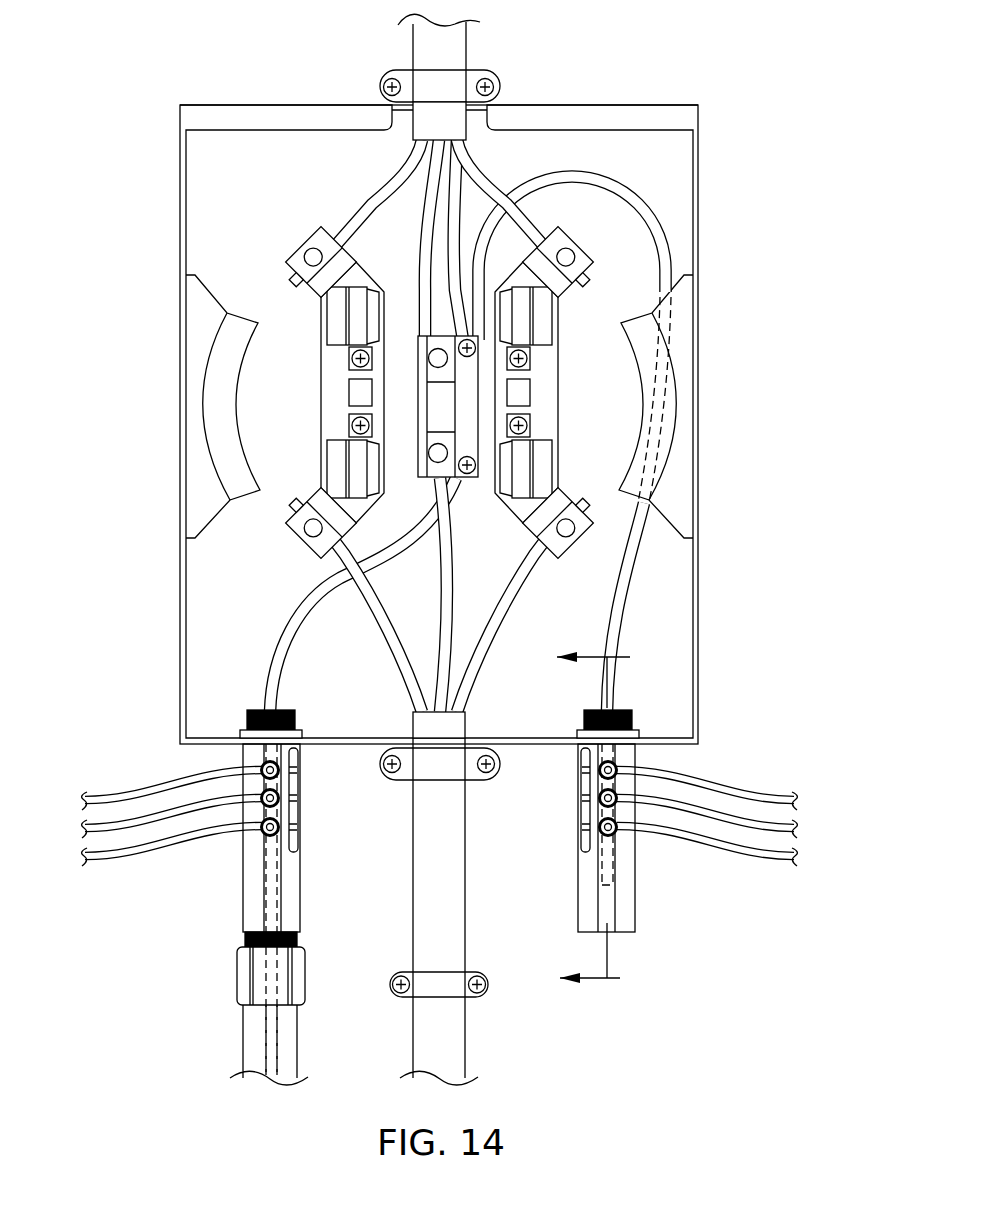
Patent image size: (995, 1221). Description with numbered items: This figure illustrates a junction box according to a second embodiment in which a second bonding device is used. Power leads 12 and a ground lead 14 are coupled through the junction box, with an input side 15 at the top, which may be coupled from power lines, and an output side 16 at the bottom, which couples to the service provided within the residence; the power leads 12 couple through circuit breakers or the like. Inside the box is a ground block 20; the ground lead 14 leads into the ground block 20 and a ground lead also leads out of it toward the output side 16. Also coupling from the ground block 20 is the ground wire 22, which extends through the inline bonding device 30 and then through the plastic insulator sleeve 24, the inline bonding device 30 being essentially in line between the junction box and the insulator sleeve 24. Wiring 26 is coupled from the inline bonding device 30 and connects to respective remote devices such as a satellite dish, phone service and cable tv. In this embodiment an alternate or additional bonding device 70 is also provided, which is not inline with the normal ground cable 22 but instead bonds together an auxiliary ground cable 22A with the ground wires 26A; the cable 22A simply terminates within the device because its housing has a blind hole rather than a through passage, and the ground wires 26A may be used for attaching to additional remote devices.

The power leads 12 is at (368, 208).
The ground lead 14 is at (427, 253).
The input side 15 is at (478, 53).
The output side 16 is at (475, 795).
The ground block 20 is at (418, 447).
The ground wire 22 is at (292, 635).
The auxiliary ground cable 22A is at (622, 555).
The plastic insulator sleeve 24 is at (243, 1027).
The wiring 26 is at (130, 783).
The ground wires 26A is at (735, 790).
The inline bonding device 30 is at (237, 885).
The bonding device 70 is at (654, 885).